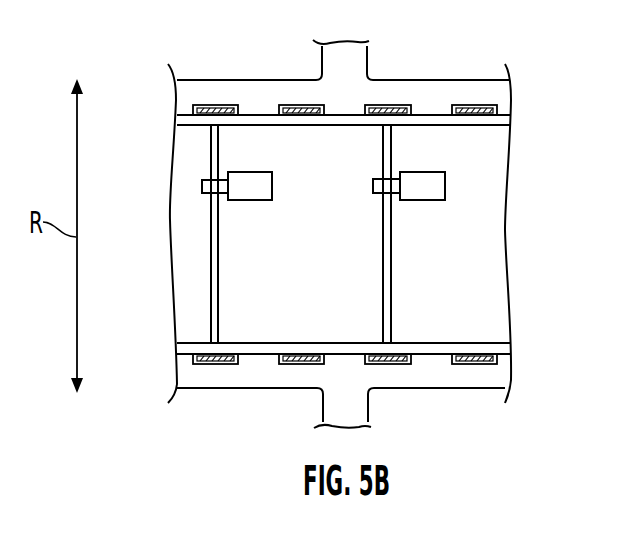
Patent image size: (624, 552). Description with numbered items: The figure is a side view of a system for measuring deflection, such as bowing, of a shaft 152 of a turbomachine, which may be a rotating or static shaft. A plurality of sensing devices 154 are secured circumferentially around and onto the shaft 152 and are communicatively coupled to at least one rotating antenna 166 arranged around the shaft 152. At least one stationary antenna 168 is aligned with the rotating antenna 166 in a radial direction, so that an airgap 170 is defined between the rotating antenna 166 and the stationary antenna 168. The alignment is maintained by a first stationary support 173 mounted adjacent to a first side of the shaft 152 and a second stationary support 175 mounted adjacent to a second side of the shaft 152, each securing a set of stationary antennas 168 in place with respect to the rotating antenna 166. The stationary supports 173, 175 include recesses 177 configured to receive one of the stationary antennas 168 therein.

The shaft 152 is at (359, 248).
The sensing devices 154 is at (259, 205).
The rotating antenna 166 is at (392, 295).
The stationary antenna 168 is at (477, 116).
The airgap 170 is at (268, 118).
The first stationary support 173 is at (428, 80).
The second stationary support 175 is at (447, 388).
The recesses 177 is at (487, 104).